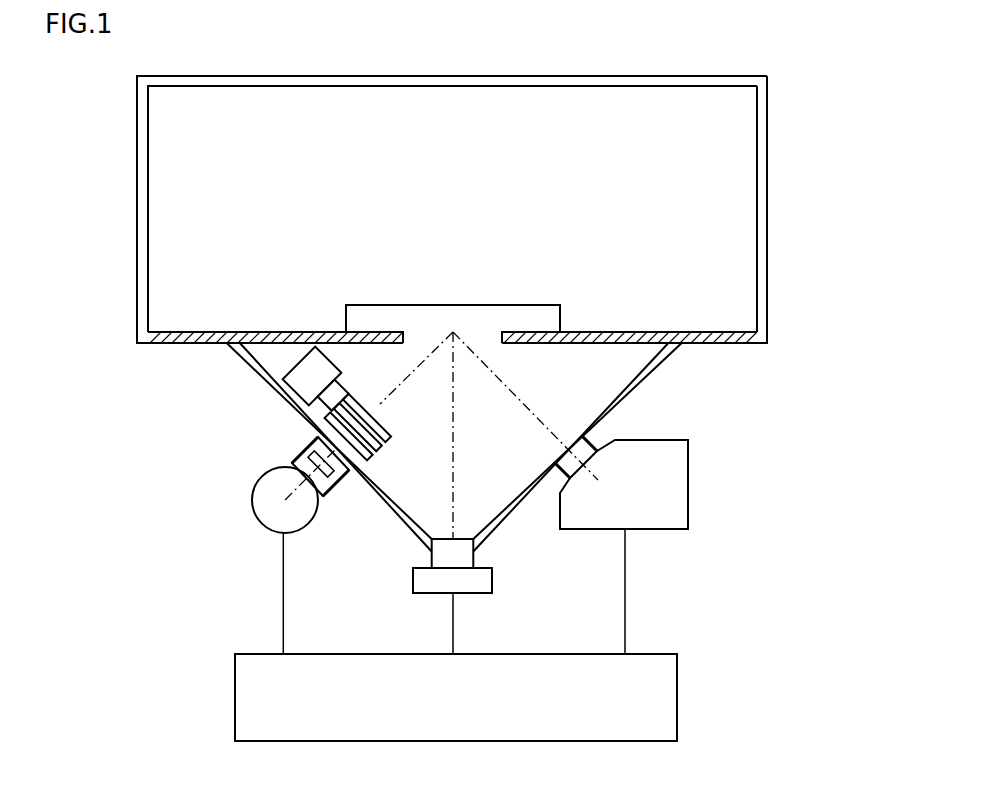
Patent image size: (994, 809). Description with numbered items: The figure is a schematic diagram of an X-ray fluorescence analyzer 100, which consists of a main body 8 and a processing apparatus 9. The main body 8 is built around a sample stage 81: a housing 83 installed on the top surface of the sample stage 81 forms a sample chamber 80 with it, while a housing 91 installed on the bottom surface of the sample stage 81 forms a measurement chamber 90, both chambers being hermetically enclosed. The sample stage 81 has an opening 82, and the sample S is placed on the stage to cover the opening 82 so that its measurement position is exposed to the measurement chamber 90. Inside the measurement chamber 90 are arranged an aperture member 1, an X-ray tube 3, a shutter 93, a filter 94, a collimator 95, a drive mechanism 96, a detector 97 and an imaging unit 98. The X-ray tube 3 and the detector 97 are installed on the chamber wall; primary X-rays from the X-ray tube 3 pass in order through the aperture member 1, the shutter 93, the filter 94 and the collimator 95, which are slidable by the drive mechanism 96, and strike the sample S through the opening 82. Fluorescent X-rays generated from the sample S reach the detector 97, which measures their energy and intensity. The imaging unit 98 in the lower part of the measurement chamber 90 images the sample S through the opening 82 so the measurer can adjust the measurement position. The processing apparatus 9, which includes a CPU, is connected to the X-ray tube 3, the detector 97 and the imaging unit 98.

The analyzer 100 is at (901, 47).
The main body 8 is at (830, 57).
The sample chamber 80 is at (177, 298).
The sample stage 81 is at (183, 343).
The opening 82 is at (503, 344).
The housing 83 is at (767, 227).
The sample S is at (561, 319).
The measurement chamber 90 is at (273, 357).
The housing 91 is at (658, 365).
The drive mechanism 96 is at (302, 388).
The collimator 95 is at (390, 441).
The filter 94 is at (380, 450).
The shutter 93 is at (370, 460).
The aperture member 1 is at (308, 460).
The X-ray tube 3 is at (257, 517).
The detector 97 is at (650, 530).
The imaging unit 98 is at (480, 596).
The processing apparatus 9 is at (630, 742).